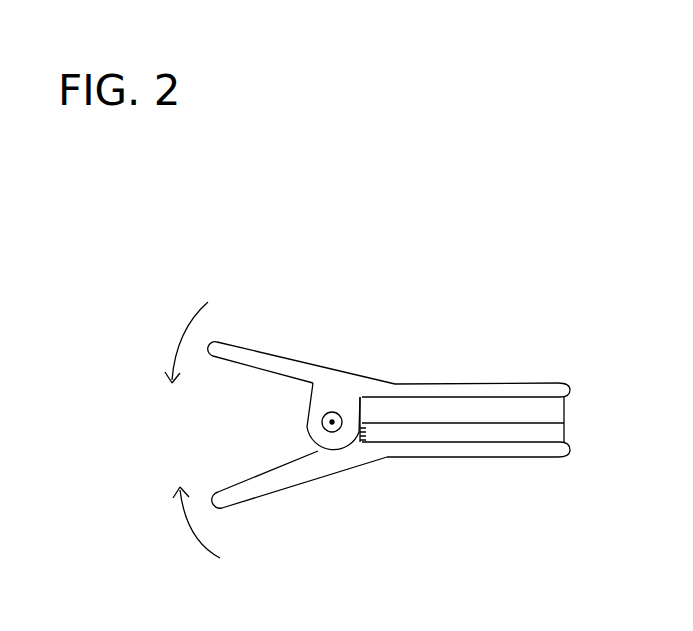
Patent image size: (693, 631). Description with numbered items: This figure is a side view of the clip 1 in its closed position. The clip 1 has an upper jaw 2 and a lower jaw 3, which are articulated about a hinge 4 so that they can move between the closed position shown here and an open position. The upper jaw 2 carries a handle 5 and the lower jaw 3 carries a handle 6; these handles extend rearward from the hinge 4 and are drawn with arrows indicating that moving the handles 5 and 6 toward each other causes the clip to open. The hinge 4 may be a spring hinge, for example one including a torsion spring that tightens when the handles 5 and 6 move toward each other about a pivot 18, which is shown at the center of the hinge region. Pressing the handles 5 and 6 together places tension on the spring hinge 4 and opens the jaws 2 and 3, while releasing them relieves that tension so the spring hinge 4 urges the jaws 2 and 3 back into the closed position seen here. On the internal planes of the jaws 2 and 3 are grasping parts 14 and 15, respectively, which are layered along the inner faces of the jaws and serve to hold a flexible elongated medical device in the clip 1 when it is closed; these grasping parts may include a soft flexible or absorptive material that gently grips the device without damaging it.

The clip 1 is at (497, 377).
The upper jaw 2 is at (403, 393).
The lower jaw 3 is at (406, 457).
The hinge 4 is at (322, 428).
The handle 5 is at (257, 358).
The handle 6 is at (260, 490).
The grasping part 14 is at (570, 397).
The grasping part 15 is at (585, 440).
The pivot 18 is at (322, 418).